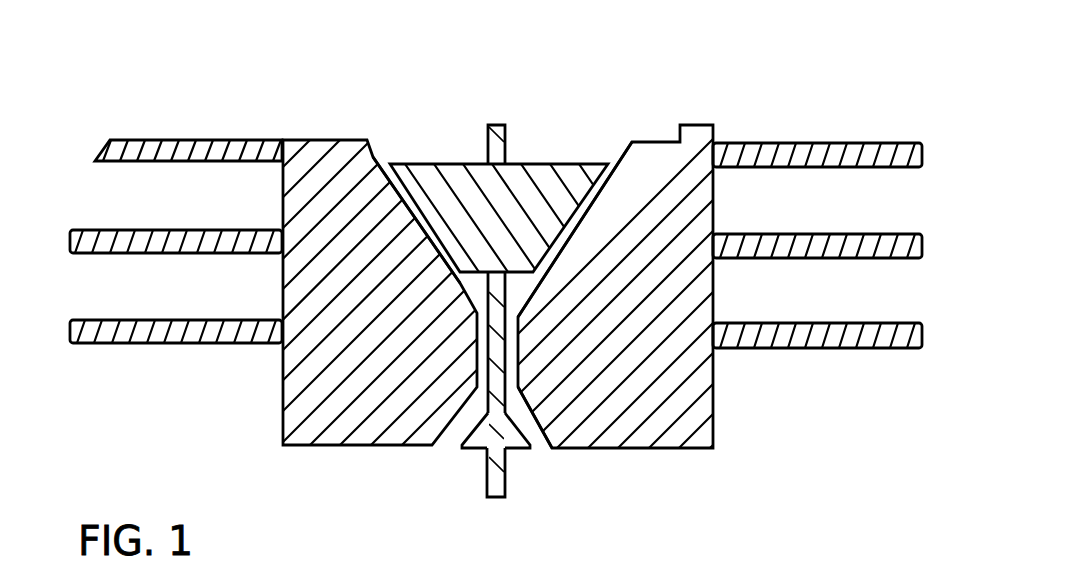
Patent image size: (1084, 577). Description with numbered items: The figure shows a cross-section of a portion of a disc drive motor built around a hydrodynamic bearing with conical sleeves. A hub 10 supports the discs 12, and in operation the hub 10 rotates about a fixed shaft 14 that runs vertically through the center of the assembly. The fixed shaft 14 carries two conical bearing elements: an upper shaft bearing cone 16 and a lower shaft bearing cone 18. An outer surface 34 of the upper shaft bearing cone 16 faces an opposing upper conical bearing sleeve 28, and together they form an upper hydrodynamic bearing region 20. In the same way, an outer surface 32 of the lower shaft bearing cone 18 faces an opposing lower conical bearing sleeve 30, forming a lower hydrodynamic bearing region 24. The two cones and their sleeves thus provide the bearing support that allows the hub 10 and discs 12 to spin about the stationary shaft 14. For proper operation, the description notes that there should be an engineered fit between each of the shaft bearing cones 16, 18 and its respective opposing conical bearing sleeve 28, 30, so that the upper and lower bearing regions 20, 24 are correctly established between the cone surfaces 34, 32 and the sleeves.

The hub 10 is at (650, 448).
The discs 12 is at (890, 145).
The fixed shaft 14 is at (492, 125).
The upper shaft bearing cone 16 is at (427, 166).
The lower shaft bearing cone 18 is at (508, 450).
The upper hydrodynamic bearing region 20 is at (613, 165).
The lower hydrodynamic bearing region 24 is at (457, 433).
The upper conical bearing sleeve 28 is at (375, 150).
The lower conical bearing sleeve 30 is at (552, 448).
The outer surface of the lower shaft bearing cone 32 is at (522, 430).
The outer surface of the upper shaft bearing cone 34 is at (383, 162).